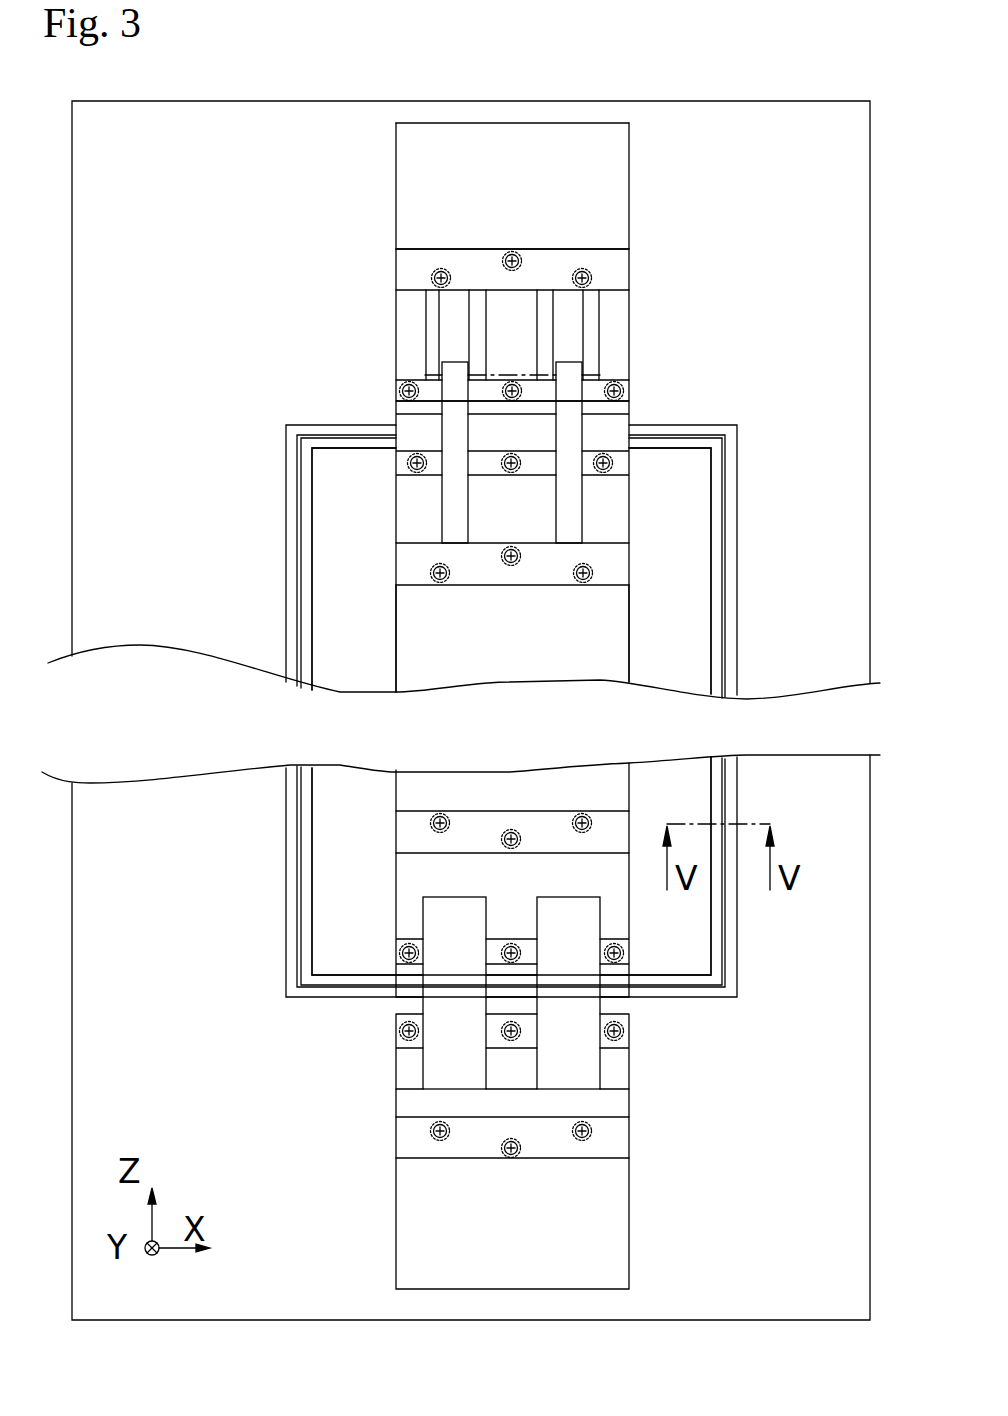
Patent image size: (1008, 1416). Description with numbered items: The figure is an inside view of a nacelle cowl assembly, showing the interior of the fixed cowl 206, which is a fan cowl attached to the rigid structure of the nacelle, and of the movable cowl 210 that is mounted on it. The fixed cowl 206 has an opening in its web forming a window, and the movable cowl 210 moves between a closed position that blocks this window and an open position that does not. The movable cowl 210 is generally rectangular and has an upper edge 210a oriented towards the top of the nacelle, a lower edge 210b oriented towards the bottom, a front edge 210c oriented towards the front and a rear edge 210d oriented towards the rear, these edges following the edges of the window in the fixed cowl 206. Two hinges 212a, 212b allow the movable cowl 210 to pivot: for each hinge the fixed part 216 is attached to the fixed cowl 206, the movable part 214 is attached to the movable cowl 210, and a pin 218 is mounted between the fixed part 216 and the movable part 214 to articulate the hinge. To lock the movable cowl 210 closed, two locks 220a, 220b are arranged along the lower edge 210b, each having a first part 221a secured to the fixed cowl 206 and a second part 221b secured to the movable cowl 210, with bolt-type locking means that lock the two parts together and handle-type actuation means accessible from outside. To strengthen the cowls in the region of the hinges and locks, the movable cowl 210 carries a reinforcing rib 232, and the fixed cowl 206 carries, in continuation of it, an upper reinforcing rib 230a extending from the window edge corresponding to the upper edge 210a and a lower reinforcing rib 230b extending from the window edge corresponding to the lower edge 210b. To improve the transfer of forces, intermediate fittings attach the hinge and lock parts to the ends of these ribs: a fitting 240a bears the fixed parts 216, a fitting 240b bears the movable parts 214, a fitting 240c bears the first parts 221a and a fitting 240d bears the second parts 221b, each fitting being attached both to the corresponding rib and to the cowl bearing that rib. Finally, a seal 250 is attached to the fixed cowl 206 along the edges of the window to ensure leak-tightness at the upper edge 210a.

The fixed cowl 206 is at (827, 163).
The movable cowl 210 is at (340, 773).
The upper edge 210a is at (698, 450).
The lower edge 210b is at (683, 977).
The front edge 210c is at (712, 925).
The rear edge 210d is at (312, 972).
The hinge 212a is at (700, 292).
The hinge 212b is at (265, 414).
The movable part 214 is at (568, 523).
The fixed part 216 is at (458, 318).
The pin 218 is at (591, 375).
The lock 220a is at (675, 1124).
The lock 220b is at (345, 1058).
The first part 221a is at (437, 1018).
The second part 221b is at (438, 920).
The upper reinforcing rib 230a is at (408, 178).
The lower reinforcing rib 230b is at (402, 1247).
The reinforcing rib 232 is at (402, 805).
The fitting 240a is at (408, 267).
The fitting 240b is at (417, 562).
The fitting 240c is at (402, 1145).
The fitting 240d is at (402, 839).
The seal 250 is at (292, 532).